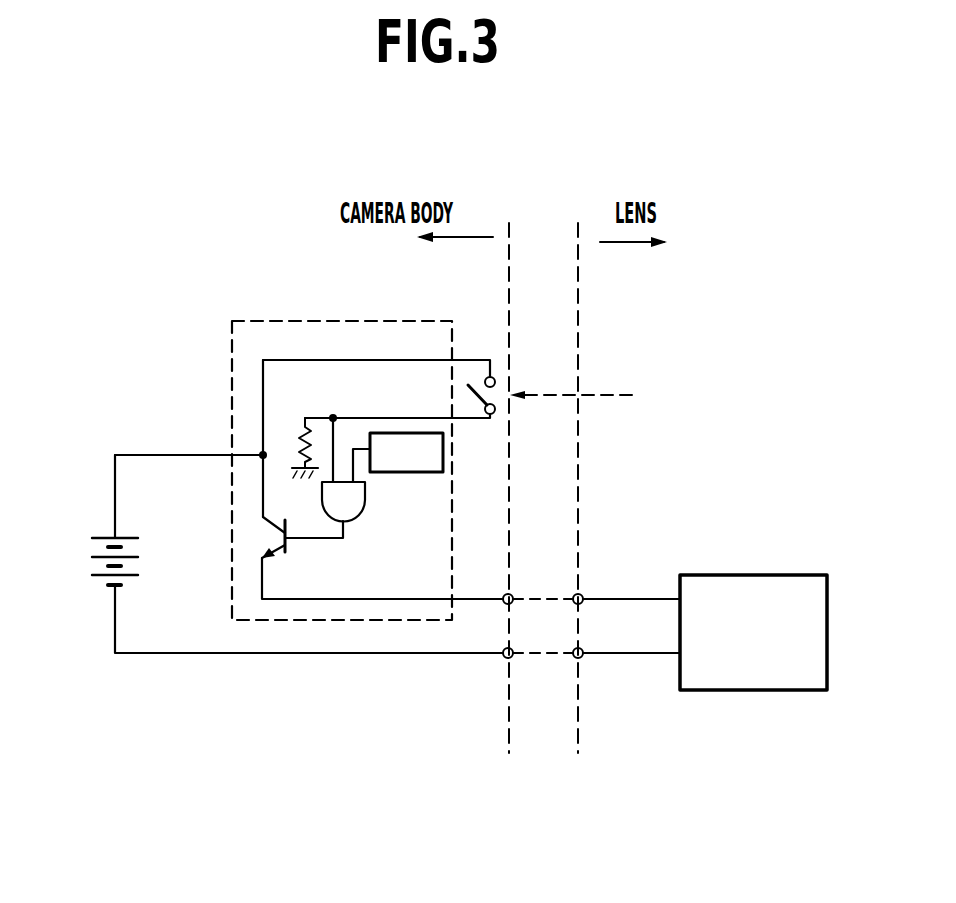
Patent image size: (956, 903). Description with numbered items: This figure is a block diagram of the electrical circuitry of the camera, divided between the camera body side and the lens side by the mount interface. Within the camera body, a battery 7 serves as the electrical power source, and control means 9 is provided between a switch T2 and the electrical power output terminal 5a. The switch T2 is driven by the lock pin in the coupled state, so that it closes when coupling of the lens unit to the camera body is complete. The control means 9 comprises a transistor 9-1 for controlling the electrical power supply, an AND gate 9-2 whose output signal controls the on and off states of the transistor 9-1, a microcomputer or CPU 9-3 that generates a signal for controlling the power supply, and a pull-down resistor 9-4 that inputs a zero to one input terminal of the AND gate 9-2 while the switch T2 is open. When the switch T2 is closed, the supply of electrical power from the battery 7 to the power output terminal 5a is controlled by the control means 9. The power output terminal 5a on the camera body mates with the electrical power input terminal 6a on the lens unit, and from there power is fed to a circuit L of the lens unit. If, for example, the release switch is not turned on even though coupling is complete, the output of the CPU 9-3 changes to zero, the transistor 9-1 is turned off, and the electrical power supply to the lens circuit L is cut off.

The control means 9 is at (390, 321).
The transistor 9-1 is at (288, 540).
The AND gate 9-2 is at (365, 508).
The microcomputer (CPU) 9-3 is at (405, 473).
The pull-down resistor 9-4 is at (296, 438).
The switch T2 is at (495, 380).
The electrical power output terminal 5a is at (512, 596).
The electrical power input terminal 6a is at (582, 596).
The battery 7 is at (93, 563).
The circuit of the lens unit L is at (745, 691).